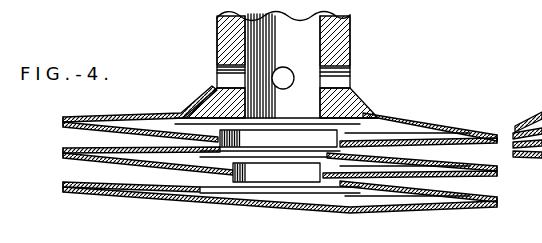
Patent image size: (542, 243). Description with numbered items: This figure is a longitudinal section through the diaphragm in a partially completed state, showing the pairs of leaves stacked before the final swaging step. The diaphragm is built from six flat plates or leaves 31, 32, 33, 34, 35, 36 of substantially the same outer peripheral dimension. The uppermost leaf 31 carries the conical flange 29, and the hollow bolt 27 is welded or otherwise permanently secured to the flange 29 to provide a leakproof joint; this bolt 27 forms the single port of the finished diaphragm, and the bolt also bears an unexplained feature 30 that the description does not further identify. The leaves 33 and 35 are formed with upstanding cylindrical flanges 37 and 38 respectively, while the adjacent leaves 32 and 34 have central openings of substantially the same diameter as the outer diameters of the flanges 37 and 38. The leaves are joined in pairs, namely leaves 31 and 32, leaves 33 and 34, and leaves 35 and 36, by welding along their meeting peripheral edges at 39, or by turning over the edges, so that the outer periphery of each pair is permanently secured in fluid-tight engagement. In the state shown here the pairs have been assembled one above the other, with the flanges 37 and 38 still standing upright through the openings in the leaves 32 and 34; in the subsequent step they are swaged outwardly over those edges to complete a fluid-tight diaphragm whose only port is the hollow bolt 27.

The bolt 27 is at (347, 42).
The conical flange 29 is at (365, 114).
The hub groove 30 is at (345, 78).
The leaf 31 is at (165, 116).
The leaf 32 is at (103, 130).
The leaf 33 is at (132, 148).
The leaf 34 is at (103, 164).
The leaf 35 is at (135, 183).
The leaf 36 is at (140, 200).
The cylindrical flange 37 is at (258, 143).
The cylindrical flange 38 is at (265, 172).
The welded peripheral edges 39 is at (76, 117).